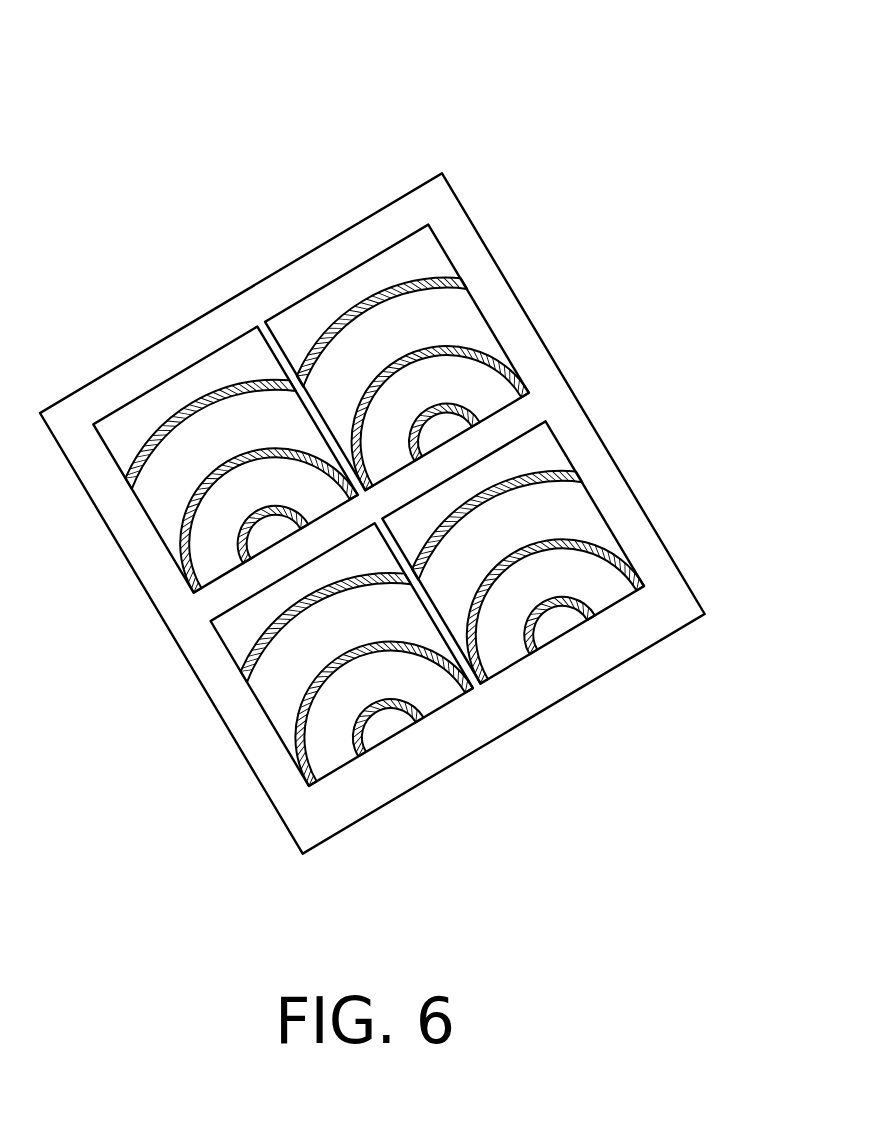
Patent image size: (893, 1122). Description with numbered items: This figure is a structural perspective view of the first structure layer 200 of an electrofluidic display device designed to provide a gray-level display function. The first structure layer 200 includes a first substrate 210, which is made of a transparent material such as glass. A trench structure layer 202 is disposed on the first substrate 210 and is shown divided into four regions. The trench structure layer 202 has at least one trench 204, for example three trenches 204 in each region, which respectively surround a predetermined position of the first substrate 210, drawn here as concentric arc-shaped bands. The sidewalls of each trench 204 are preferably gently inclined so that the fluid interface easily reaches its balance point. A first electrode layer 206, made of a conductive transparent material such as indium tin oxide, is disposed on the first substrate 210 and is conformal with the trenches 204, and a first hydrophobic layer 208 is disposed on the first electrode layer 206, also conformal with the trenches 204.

The first structure layer 200 is at (413, 432).
The trench structure layer 202 is at (438, 326).
The trench 204 is at (460, 278).
The first electrode layer 206 is at (565, 531).
The first hydrophobic layer 208 is at (545, 452).
The first substrate 210 is at (658, 537).